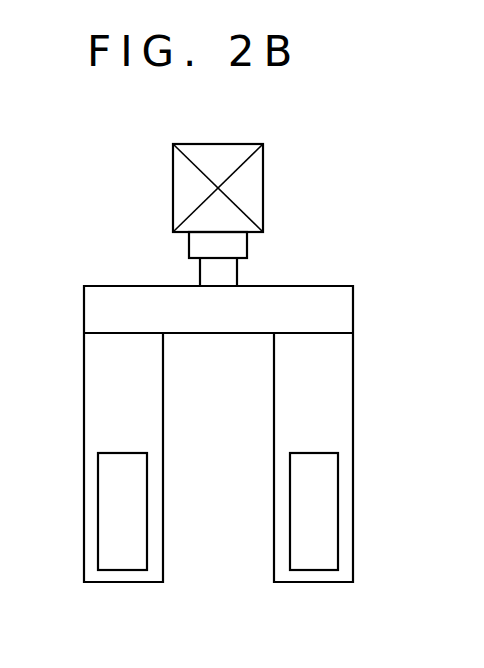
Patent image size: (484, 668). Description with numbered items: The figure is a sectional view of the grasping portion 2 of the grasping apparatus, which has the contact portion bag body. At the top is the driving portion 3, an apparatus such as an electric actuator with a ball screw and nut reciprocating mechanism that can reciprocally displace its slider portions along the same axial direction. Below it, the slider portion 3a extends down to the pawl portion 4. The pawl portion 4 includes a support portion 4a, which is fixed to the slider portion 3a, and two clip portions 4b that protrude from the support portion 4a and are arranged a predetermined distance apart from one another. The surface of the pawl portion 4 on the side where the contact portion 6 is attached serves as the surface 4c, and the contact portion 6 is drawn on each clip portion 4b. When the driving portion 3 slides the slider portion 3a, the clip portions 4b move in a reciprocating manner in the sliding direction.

The grasping portion 2 is at (92, 164).
The driving portion 3 is at (287, 180).
The slider portion 3a is at (248, 244).
The pawl portion 4 is at (369, 355).
The support portion 4a is at (220, 335).
The clip portions 4b is at (83, 396).
The surface 4c is at (94, 430).
The contact portion 6 is at (137, 515).